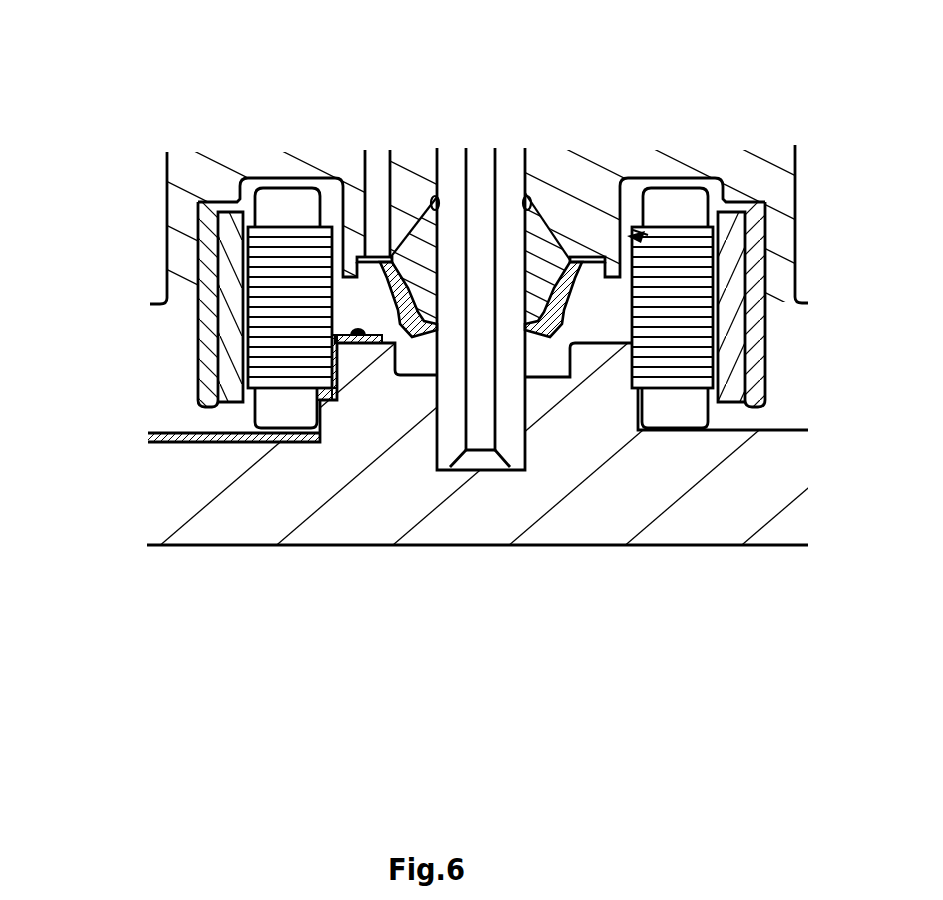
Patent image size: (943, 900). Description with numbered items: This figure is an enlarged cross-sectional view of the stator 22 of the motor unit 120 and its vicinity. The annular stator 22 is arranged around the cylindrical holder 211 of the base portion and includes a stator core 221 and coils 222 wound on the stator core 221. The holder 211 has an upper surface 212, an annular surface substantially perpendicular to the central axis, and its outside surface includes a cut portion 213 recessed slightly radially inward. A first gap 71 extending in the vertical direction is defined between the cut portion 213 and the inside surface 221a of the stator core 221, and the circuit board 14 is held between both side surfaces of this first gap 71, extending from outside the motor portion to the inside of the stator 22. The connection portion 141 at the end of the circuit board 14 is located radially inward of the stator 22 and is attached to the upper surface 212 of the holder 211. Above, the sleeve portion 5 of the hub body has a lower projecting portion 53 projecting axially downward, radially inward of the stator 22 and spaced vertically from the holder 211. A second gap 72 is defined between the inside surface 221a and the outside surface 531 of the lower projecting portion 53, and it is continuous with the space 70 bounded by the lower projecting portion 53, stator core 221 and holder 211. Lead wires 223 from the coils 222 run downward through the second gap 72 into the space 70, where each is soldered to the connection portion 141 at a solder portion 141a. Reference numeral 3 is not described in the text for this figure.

The motor unit 120 is at (204, 61).
The housing 3 is at (757, 123).
The sleeve portion 5 is at (560, 123).
The lower projecting portion 53 is at (575, 195).
The outside surface of the lower projecting portion 531 is at (622, 228).
The space 70 is at (373, 325).
The second gap 72 is at (633, 240).
The first gap 71 is at (352, 333).
The stator 22 is at (226, 617).
The lead wires 223 is at (325, 178).
The cut portion 213 is at (322, 365).
The holder 211 is at (622, 382).
The upper surface of the holder 212 is at (603, 337).
The stator core 221 is at (283, 432).
The inside surface of the stator core 221a is at (327, 273).
The coils 222 is at (288, 415).
The circuit board 14 is at (325, 410).
The connection portion 141 is at (362, 347).
The solder portion 141a is at (415, 302).